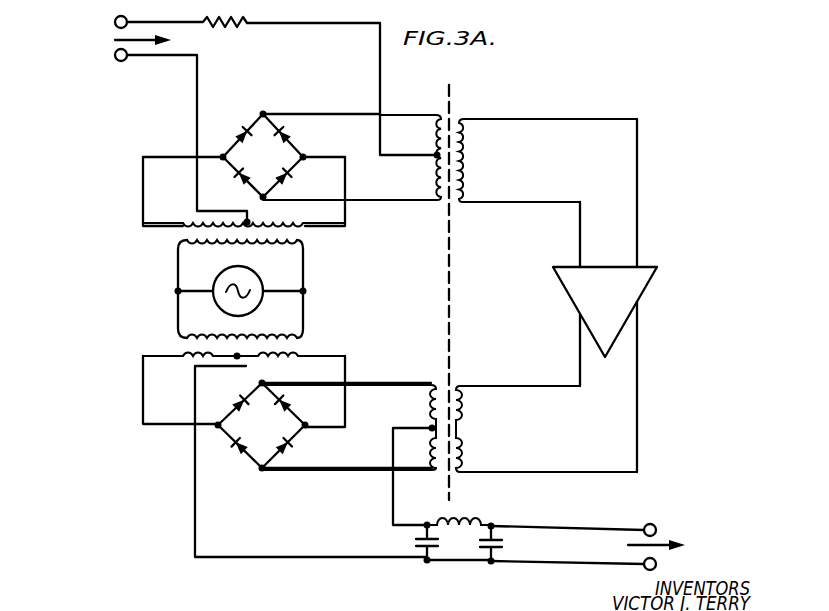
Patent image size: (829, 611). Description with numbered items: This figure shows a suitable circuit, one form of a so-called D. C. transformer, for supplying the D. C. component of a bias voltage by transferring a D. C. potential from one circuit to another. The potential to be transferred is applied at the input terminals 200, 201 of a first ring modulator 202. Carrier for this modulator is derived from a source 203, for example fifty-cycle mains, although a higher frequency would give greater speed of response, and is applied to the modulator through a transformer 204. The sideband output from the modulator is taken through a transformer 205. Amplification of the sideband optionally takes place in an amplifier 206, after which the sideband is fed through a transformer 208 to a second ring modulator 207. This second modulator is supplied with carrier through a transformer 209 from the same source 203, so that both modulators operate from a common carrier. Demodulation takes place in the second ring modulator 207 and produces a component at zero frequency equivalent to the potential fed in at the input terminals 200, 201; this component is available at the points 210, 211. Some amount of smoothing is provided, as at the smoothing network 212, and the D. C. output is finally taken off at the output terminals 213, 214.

The input terminal 200 is at (272, 77).
The input terminal 201 is at (177, 135).
The ring modulator 202 is at (261, 169).
The carrier source 203 is at (241, 289).
The transformer 204 is at (242, 237).
The transformer 205 is at (450, 292).
The amplifier 206 is at (621, 295).
The second ring modulator 207 is at (287, 414).
The transformer 208 is at (449, 416).
The transformer 209 is at (242, 348).
The output point 210 is at (240, 358).
The output point 211 is at (414, 464).
The smoothing 212 is at (450, 545).
The output terminal 213 is at (588, 521).
The output terminal 214 is at (581, 579).